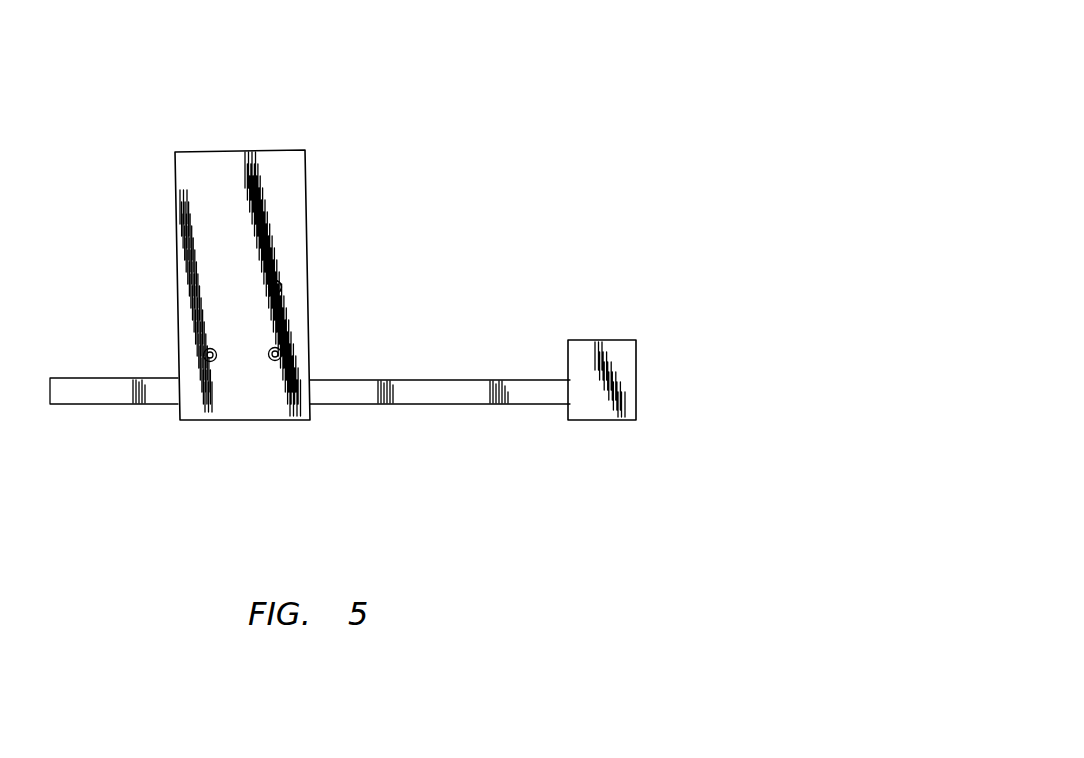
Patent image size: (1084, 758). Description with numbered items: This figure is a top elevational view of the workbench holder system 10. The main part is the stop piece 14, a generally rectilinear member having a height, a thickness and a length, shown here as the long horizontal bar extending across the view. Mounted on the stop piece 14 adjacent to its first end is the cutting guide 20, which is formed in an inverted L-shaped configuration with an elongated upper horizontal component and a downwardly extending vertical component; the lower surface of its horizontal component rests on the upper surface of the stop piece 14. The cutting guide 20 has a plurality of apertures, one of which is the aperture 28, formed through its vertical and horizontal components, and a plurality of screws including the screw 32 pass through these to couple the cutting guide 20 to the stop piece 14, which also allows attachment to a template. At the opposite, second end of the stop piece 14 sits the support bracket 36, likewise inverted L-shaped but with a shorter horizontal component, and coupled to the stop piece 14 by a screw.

The workbench holder system 10 is at (683, 163).
The stop piece 14 is at (435, 405).
The cutting guide 20 is at (305, 150).
The aperture 28 is at (282, 292).
The screw 32 is at (280, 282).
The support bracket 36 is at (620, 338).